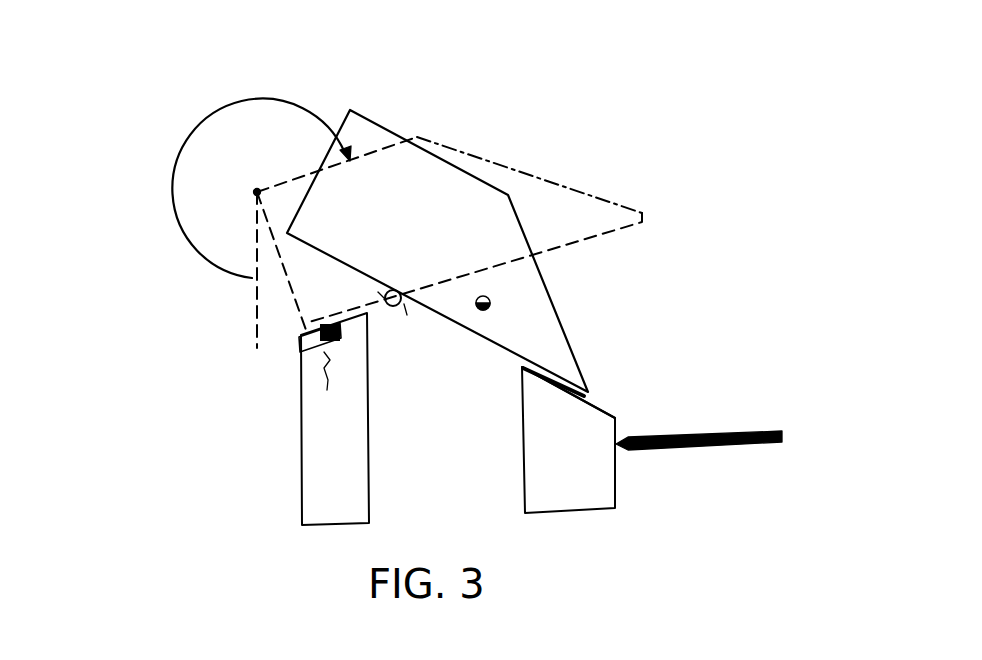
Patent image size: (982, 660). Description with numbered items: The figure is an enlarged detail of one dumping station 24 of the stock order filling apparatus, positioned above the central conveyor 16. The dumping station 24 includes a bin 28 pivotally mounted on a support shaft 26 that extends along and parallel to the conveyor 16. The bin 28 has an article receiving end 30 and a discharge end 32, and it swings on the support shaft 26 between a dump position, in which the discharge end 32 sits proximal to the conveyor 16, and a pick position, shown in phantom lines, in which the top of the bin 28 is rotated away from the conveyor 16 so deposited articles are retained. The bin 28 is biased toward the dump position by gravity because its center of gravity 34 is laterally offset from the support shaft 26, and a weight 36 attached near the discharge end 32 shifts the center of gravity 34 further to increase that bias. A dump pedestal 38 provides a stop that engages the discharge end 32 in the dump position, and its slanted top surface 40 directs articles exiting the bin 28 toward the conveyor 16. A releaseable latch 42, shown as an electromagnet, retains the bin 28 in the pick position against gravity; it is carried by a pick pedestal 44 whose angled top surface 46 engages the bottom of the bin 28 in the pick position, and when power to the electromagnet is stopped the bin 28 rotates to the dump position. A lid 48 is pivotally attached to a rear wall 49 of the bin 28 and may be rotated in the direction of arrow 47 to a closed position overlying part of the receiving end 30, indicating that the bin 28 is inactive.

The central conveyor 16 is at (737, 433).
The dumping station 24 is at (397, 104).
The support shaft 26 is at (393, 308).
The bin 28 is at (473, 190).
The article receiving end 30 is at (298, 206).
The discharge end 32 is at (583, 376).
The center of gravity 34 is at (486, 312).
The weight 36 is at (553, 378).
The dump pedestal 38 is at (598, 482).
The slanted top surface 40 is at (605, 408).
The releaseable latch 42 is at (305, 348).
The pick pedestal 44 is at (313, 463).
The angled top surface 46 is at (300, 325).
The arrow 47 is at (230, 107).
The lid 48 is at (313, 318).
The rear wall 49 is at (290, 297).